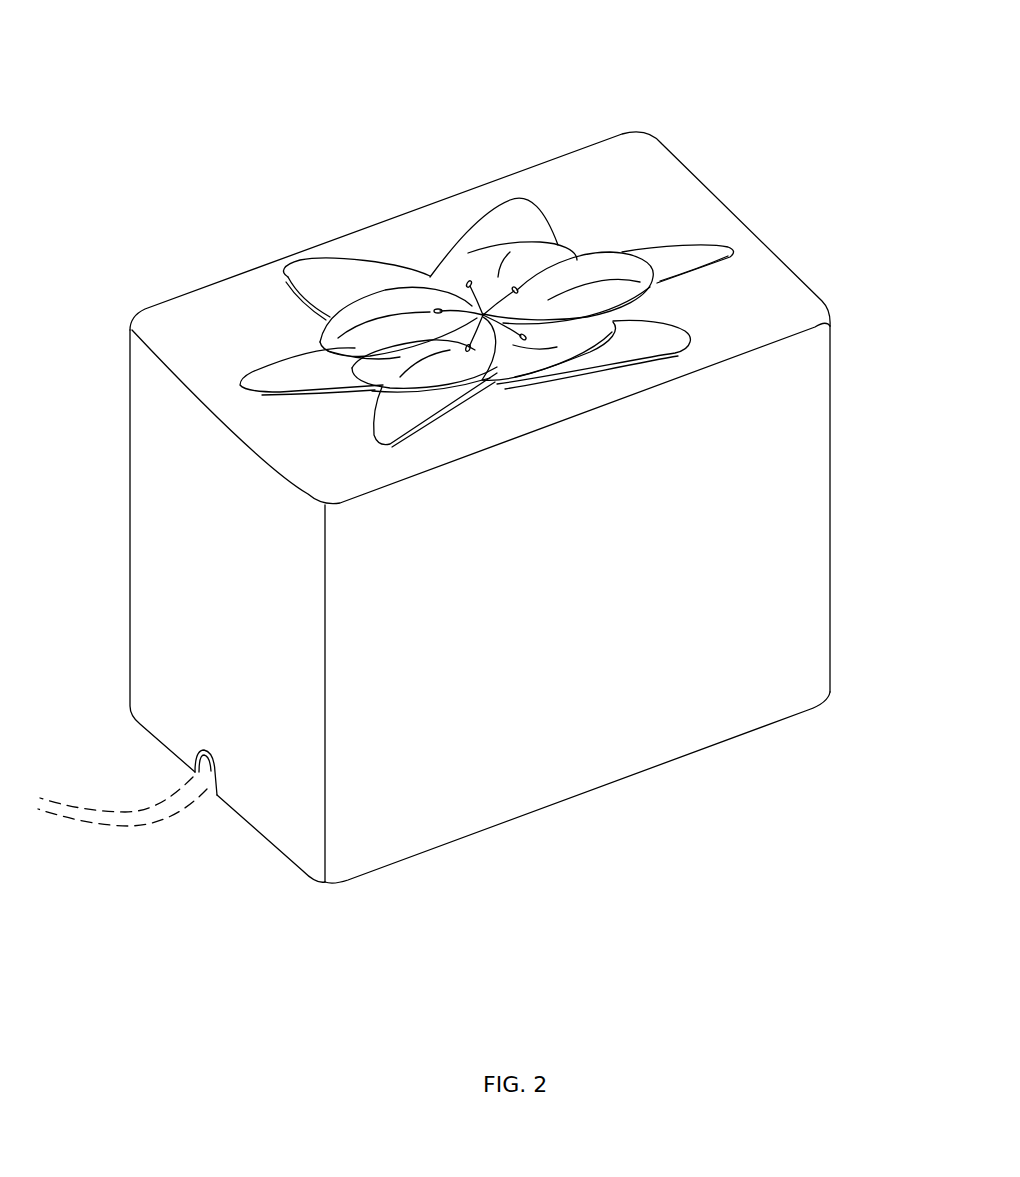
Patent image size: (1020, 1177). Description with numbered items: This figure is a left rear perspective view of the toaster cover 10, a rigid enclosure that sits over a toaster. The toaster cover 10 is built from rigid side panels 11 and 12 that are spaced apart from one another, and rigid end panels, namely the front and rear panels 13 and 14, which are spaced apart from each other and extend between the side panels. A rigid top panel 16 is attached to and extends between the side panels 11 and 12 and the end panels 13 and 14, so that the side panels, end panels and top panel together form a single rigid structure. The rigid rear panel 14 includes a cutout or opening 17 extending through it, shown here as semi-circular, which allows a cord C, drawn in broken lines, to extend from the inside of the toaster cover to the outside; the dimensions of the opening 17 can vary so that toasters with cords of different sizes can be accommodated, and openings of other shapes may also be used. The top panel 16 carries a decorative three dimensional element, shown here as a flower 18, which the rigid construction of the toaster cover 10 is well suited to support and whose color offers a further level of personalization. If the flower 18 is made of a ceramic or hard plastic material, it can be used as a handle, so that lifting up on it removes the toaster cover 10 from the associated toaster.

The toaster cover 10 is at (806, 96).
The side panel 11 is at (163, 290).
The side panel 12 is at (578, 617).
The front panel 13 is at (843, 413).
The rear panel 14 is at (223, 617).
The top panel 16 is at (468, 208).
The opening 17 is at (205, 760).
The flower 18 is at (638, 239).
The cord C is at (80, 802).